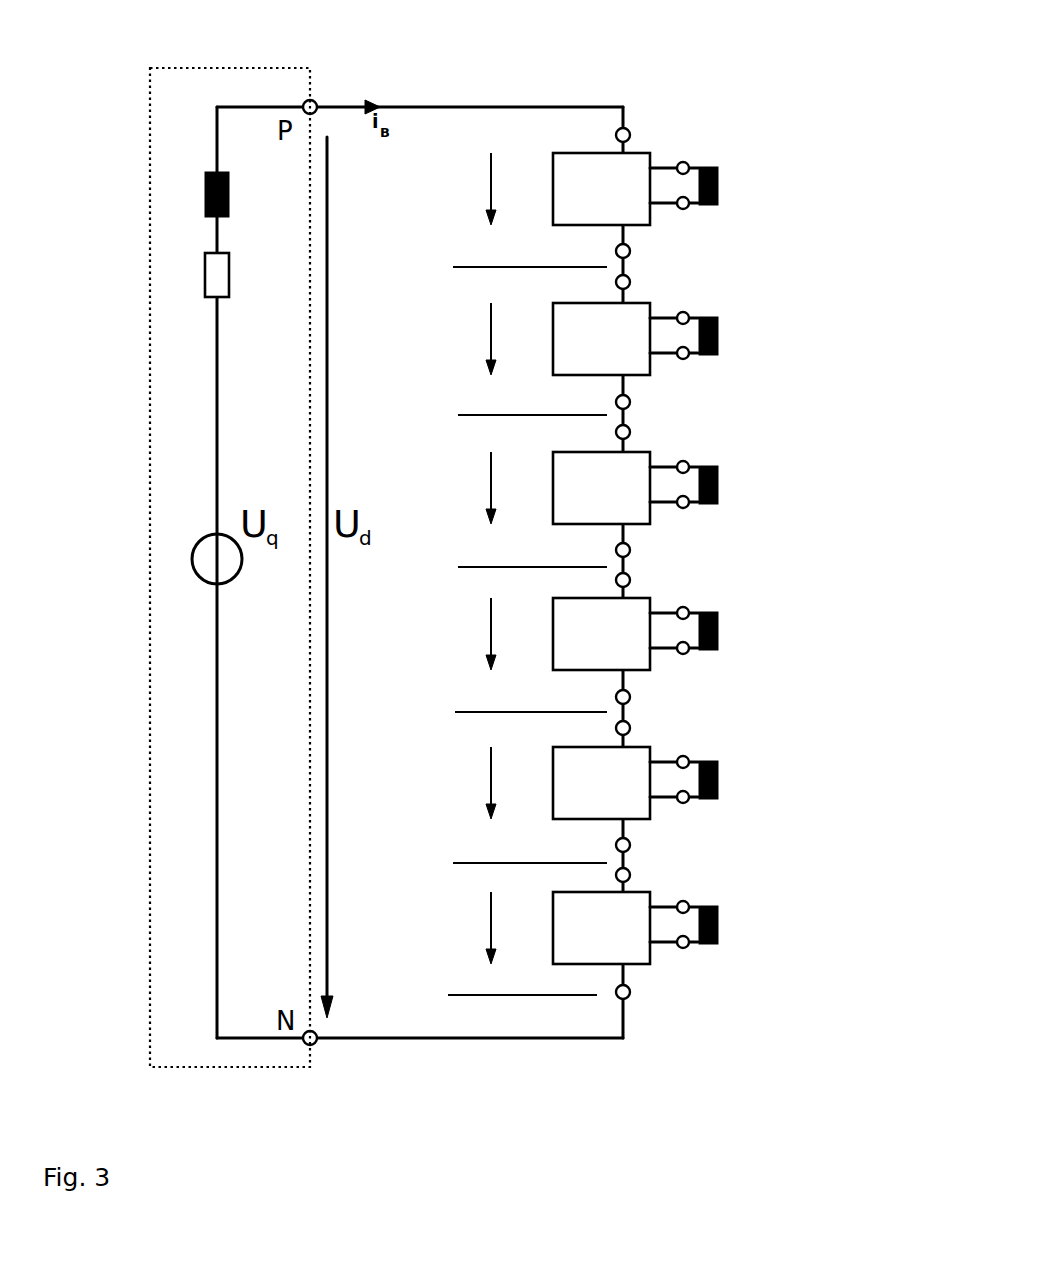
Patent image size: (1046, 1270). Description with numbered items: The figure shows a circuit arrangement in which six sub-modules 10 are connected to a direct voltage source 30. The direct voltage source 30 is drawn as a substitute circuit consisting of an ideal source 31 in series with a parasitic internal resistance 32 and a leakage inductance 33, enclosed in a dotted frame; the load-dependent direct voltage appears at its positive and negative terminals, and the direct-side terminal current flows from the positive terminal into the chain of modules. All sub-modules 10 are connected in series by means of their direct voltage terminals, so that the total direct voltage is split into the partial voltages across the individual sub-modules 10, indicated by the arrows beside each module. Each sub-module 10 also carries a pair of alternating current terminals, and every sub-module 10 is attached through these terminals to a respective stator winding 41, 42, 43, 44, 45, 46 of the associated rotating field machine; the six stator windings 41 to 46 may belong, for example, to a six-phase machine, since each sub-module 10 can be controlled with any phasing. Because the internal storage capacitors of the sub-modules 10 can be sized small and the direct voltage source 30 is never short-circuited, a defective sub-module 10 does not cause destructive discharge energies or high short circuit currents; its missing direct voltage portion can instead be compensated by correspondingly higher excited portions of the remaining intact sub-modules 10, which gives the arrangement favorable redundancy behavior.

The sub-module 10 is at (627, 187).
The direct voltage source 30 is at (253, 90).
The ideal source 31 is at (235, 570).
The parasitic internal resistance 32 is at (237, 275).
The leakage inductance 33 is at (237, 194).
The stator winding 41 is at (723, 187).
The stator winding 42 is at (728, 343).
The stator winding 43 is at (732, 487).
The stator winding 44 is at (727, 638).
The stator winding 45 is at (727, 783).
The stator winding 46 is at (727, 930).